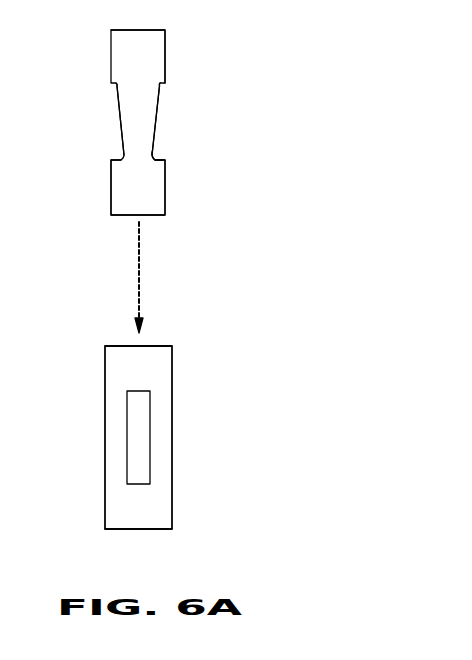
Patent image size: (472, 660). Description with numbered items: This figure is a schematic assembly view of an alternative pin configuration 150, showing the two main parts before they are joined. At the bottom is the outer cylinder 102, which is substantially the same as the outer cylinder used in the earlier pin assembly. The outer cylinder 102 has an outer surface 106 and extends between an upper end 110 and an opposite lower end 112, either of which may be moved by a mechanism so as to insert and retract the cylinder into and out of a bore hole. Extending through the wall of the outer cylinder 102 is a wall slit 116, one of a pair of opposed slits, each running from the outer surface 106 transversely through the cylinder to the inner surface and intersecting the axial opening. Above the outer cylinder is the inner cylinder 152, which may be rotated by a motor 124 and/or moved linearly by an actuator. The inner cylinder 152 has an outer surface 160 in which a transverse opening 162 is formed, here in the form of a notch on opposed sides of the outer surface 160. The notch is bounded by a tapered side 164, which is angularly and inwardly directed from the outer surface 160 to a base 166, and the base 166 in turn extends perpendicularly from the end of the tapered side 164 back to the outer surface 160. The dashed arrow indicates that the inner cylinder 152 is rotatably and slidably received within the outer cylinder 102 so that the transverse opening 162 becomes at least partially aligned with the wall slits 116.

The motor 124 is at (166, 40).
The inner cylinder 152 is at (167, 59).
The transverse opening 162 is at (160, 135).
The tapered side 164 is at (120, 117).
The base 166 is at (165, 158).
The outer surface 160 is at (150, 193).
The pin configuration 150 is at (233, 245).
The upper end 110 is at (120, 345).
The outer surface 106 is at (160, 365).
The outer cylinder 102 is at (173, 412).
The wall slit 116 is at (132, 440).
The lower end 112 is at (153, 530).